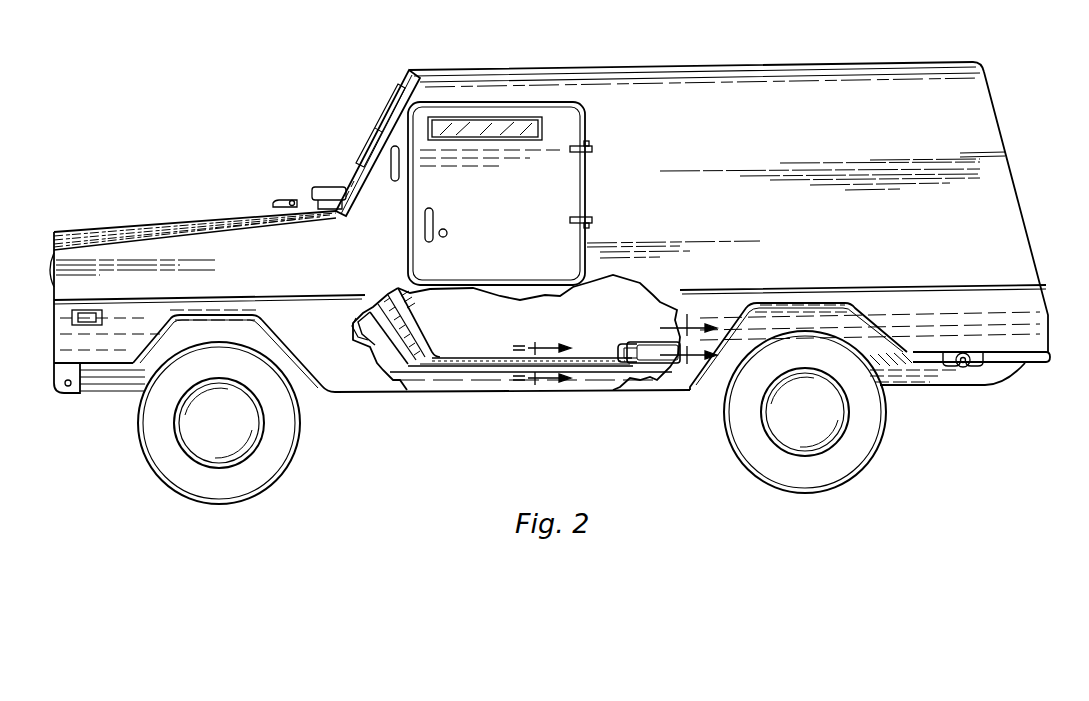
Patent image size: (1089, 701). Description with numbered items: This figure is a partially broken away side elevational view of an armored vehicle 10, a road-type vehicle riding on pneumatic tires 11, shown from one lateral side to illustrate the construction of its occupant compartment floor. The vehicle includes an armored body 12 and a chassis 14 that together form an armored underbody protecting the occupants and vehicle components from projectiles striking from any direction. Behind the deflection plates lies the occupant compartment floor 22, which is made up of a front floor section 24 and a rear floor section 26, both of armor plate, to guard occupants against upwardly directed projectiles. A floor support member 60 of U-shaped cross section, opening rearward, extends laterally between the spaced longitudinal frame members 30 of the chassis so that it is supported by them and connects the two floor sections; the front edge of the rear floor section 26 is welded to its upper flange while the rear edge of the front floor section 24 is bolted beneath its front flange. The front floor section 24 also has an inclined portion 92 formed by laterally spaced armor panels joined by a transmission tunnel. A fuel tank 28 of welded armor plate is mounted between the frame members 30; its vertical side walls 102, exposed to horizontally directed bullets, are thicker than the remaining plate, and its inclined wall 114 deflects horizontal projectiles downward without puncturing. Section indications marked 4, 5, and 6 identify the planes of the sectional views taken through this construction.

The armored vehicle 10 is at (280, 82).
The pneumatic tires 11 is at (286, 468).
The armored body 12 is at (1010, 104).
The chassis 14 is at (440, 400).
The occupant compartment floor 22 is at (592, 373).
The front floor section 24 is at (485, 358).
The rear floor section 26 is at (630, 343).
The fuel tank 28 is at (1012, 367).
The longitudinal frame members 30 is at (477, 379).
The floor support member 60 is at (622, 345).
The inclined portion 92 is at (402, 328).
The vertical side walls 102 is at (933, 378).
The inclined wall 114 is at (993, 383).
The section line 4- 4 is at (688, 342).
The section line 5- 5 is at (550, 363).
The section line 6- 6 is at (396, 298).